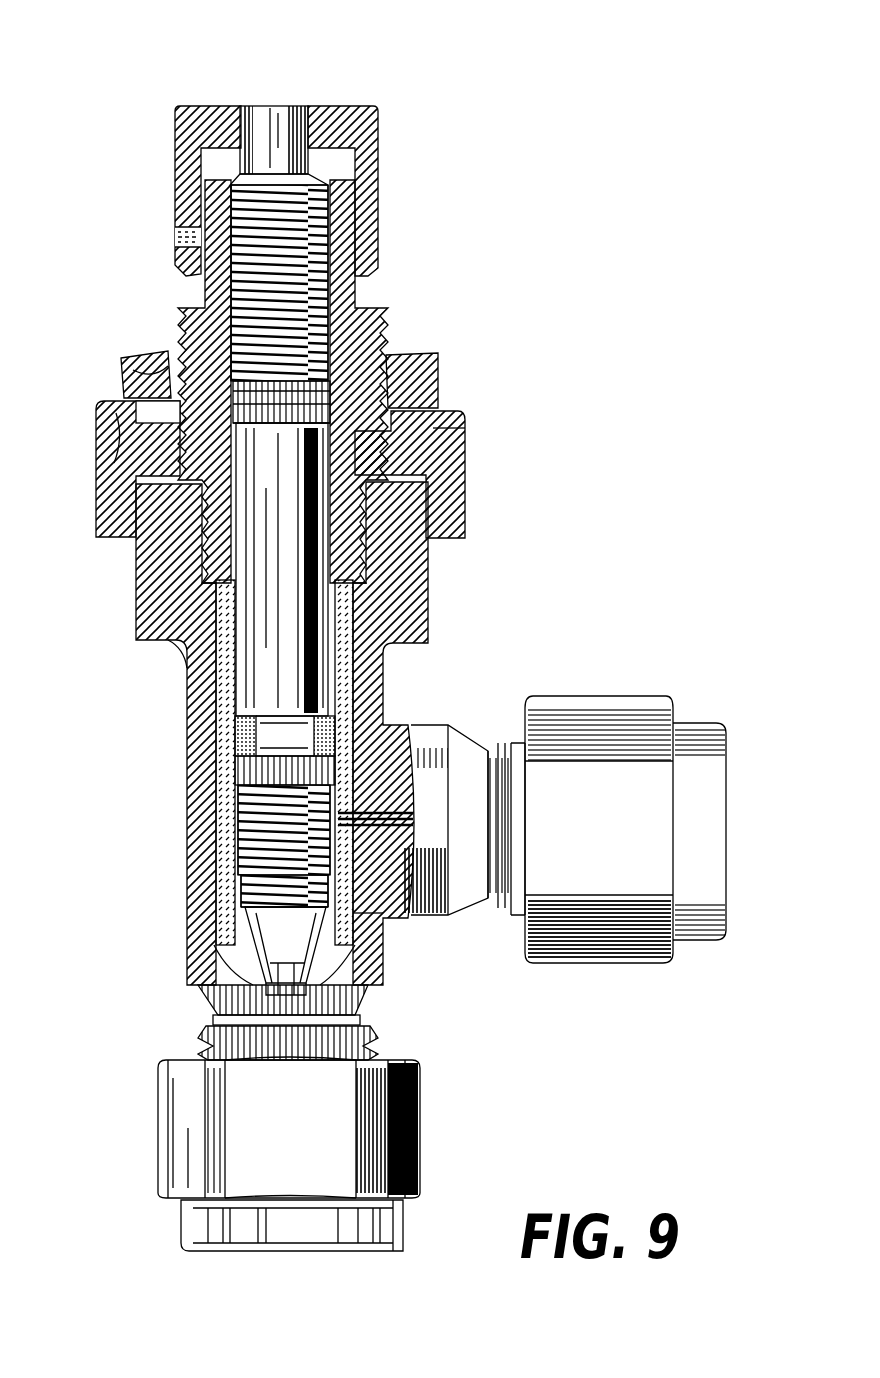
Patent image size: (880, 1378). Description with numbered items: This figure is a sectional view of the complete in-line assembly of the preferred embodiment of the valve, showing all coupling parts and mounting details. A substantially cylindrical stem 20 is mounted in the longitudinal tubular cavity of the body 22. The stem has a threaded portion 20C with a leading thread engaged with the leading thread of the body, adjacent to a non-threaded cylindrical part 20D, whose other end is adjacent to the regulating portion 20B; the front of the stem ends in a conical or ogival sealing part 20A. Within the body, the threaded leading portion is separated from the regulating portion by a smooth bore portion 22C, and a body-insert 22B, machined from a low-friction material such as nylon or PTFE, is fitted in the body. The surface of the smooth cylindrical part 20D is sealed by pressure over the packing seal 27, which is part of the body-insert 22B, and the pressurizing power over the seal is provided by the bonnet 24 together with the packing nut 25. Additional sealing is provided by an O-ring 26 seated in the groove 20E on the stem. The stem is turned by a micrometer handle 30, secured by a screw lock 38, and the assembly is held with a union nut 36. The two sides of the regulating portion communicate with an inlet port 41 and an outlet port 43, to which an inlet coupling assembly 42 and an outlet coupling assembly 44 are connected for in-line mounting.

The stem 20 is at (268, 90).
The conical/ogival front sealing part of the stem 20A is at (182, 925).
The regulating portion of the stem 20B is at (205, 872).
The threaded portion of the stem with leading thread 20C is at (350, 296).
The non-threaded cylindrical part of the stem 20D is at (184, 676).
The groove for O-ring on the stem 20E is at (198, 790).
The body of the valve 22 is at (400, 585).
The body-insert 22B is at (357, 907).
The smooth bore portion of the body or insert 22C is at (198, 705).
The bonnet 24 is at (450, 433).
The packing nut 25 is at (128, 345).
The O-ring 26 is at (225, 737).
The packing seal 27 is at (200, 582).
The micrometer handle 30 is at (358, 202).
The union nut 36 is at (106, 445).
The screw lock of the handle 38 is at (167, 220).
The inlet port 41 is at (358, 970).
The inlet coupling assembly 42 is at (305, 1137).
The outlet port 43 is at (362, 735).
The outlet coupling assembly 44 is at (688, 807).